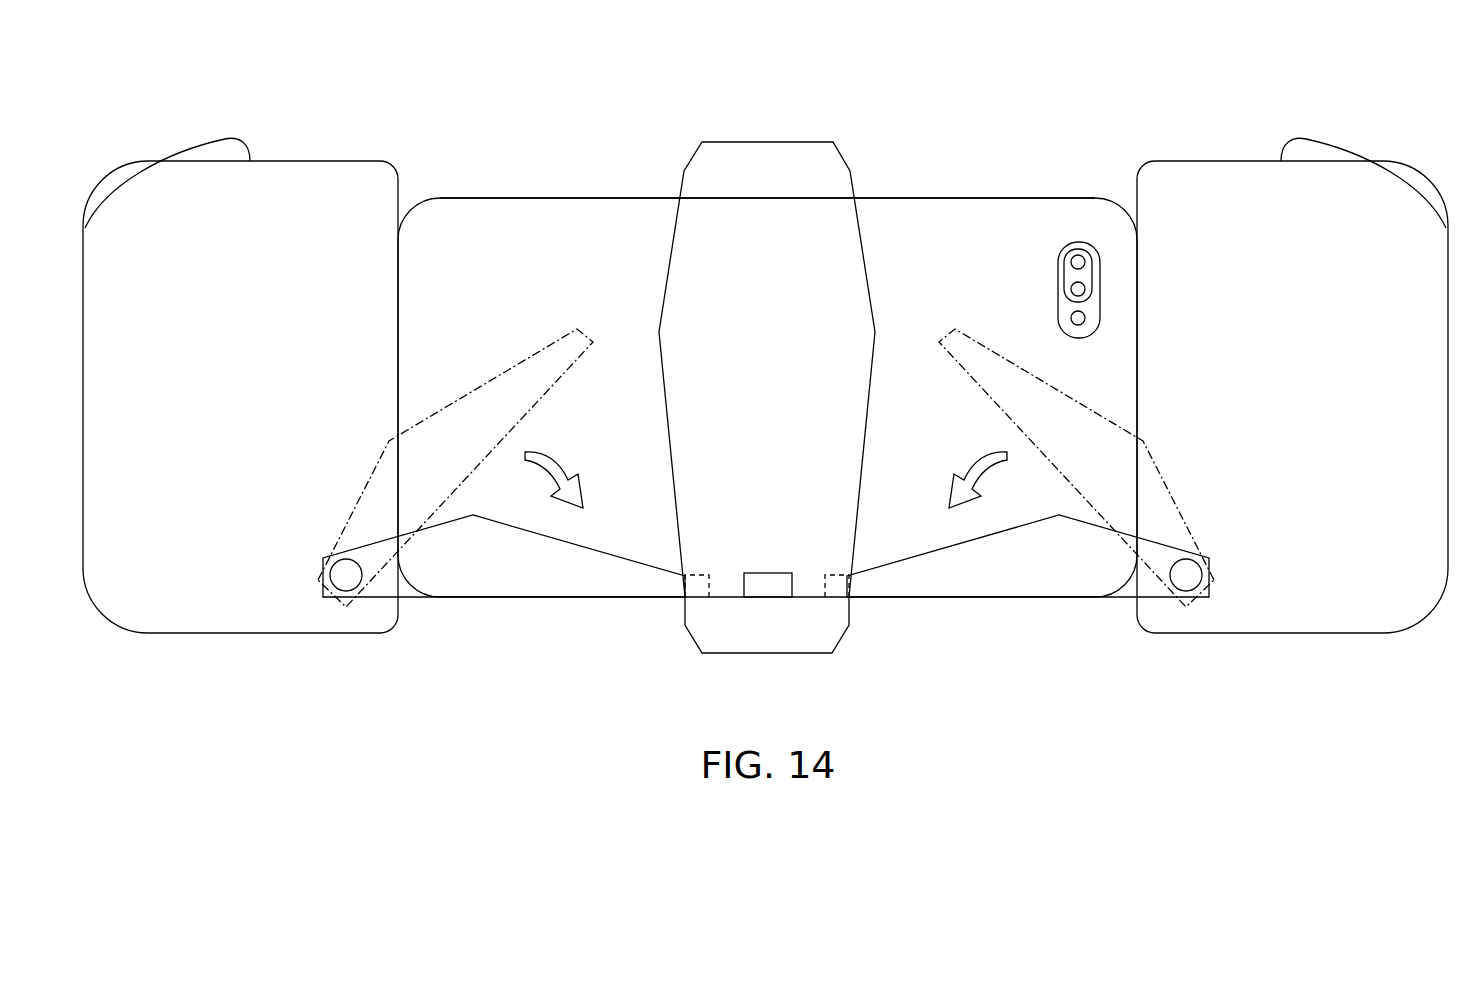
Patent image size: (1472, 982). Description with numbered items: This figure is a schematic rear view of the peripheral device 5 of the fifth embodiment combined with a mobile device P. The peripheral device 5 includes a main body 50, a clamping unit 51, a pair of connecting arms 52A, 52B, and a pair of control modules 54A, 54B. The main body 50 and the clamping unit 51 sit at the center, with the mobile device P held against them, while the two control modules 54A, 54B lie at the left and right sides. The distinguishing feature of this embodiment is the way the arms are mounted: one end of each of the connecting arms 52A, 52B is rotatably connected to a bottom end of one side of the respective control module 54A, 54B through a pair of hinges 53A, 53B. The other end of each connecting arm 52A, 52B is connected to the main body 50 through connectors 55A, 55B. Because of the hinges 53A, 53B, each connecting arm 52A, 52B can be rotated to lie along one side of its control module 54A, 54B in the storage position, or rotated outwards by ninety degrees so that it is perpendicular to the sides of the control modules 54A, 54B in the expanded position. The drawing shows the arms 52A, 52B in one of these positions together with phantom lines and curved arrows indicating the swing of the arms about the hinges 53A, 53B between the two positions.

The peripheral device 5 is at (125, 133).
The main body 50 is at (858, 230).
The clamping unit 51 is at (766, 162).
The connecting arm 52A is at (1011, 577).
The connecting arm 52B is at (519, 577).
The hinge 53A is at (1188, 577).
The hinge 53B is at (345, 577).
The control module 54A is at (312, 173).
The control module 54B is at (1204, 173).
The connector 55A is at (837, 575).
The connector 55B is at (699, 575).
The portable device P is at (562, 200).